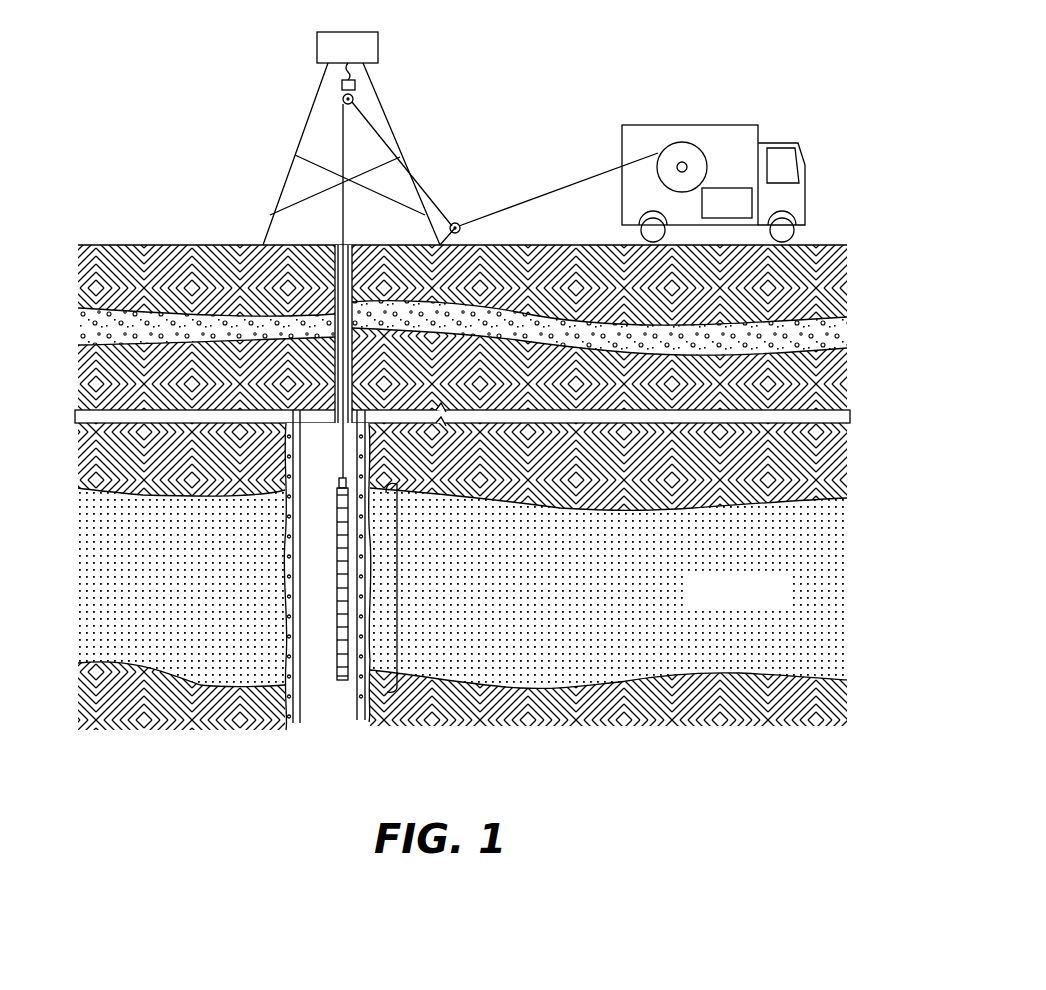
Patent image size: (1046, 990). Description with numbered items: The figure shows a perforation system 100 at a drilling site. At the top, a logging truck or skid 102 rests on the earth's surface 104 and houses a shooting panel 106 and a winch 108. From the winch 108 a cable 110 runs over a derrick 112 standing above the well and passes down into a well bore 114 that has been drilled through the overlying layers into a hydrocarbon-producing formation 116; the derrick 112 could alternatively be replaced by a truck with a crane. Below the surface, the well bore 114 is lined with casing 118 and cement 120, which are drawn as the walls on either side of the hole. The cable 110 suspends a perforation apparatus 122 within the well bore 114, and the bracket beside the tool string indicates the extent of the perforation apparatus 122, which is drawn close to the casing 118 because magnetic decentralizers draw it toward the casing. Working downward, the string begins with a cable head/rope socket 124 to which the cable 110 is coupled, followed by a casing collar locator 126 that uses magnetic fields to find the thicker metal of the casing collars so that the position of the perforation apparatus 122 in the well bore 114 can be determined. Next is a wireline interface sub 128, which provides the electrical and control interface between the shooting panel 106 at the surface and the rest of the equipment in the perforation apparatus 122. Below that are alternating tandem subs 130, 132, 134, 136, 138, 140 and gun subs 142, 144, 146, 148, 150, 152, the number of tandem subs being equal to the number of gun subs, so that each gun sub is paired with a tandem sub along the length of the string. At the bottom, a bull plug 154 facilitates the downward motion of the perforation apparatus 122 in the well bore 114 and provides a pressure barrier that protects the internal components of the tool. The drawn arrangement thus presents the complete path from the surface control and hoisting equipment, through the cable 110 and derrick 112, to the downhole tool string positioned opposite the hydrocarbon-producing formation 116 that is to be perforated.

The perforation system 100 is at (682, 73).
The logging truck or skid 102 is at (712, 125).
The earth's surface 104 is at (148, 245).
The shooting panel 106 is at (713, 214).
The winch 108 is at (670, 148).
The cable 110 is at (551, 192).
The derrick 112 is at (352, 32).
The well bore 114 is at (339, 245).
The hydrocarbon-producing formation 116 is at (726, 602).
The casing 118 is at (360, 722).
The cement 120 is at (293, 725).
The perforation apparatus 122 is at (400, 584).
The cable head/rope socket 124 is at (339, 482).
The casing collar locator 126 is at (336, 495).
The wireline interface sub 128 is at (336, 508).
The tandem sub 130 is at (336, 522).
The tandem sub 132 is at (336, 548).
The tandem sub 134 is at (336, 574).
The tandem sub 136 is at (336, 601).
The tandem sub 138 is at (336, 627).
The tandem sub 140 is at (336, 654).
The gun sub 142 is at (336, 535).
The gun sub 144 is at (336, 561).
The gun sub 146 is at (336, 588).
The gun sub 148 is at (336, 614).
The gun sub 150 is at (336, 640).
The gun sub 152 is at (336, 667).
The bull plug 154 is at (336, 676).